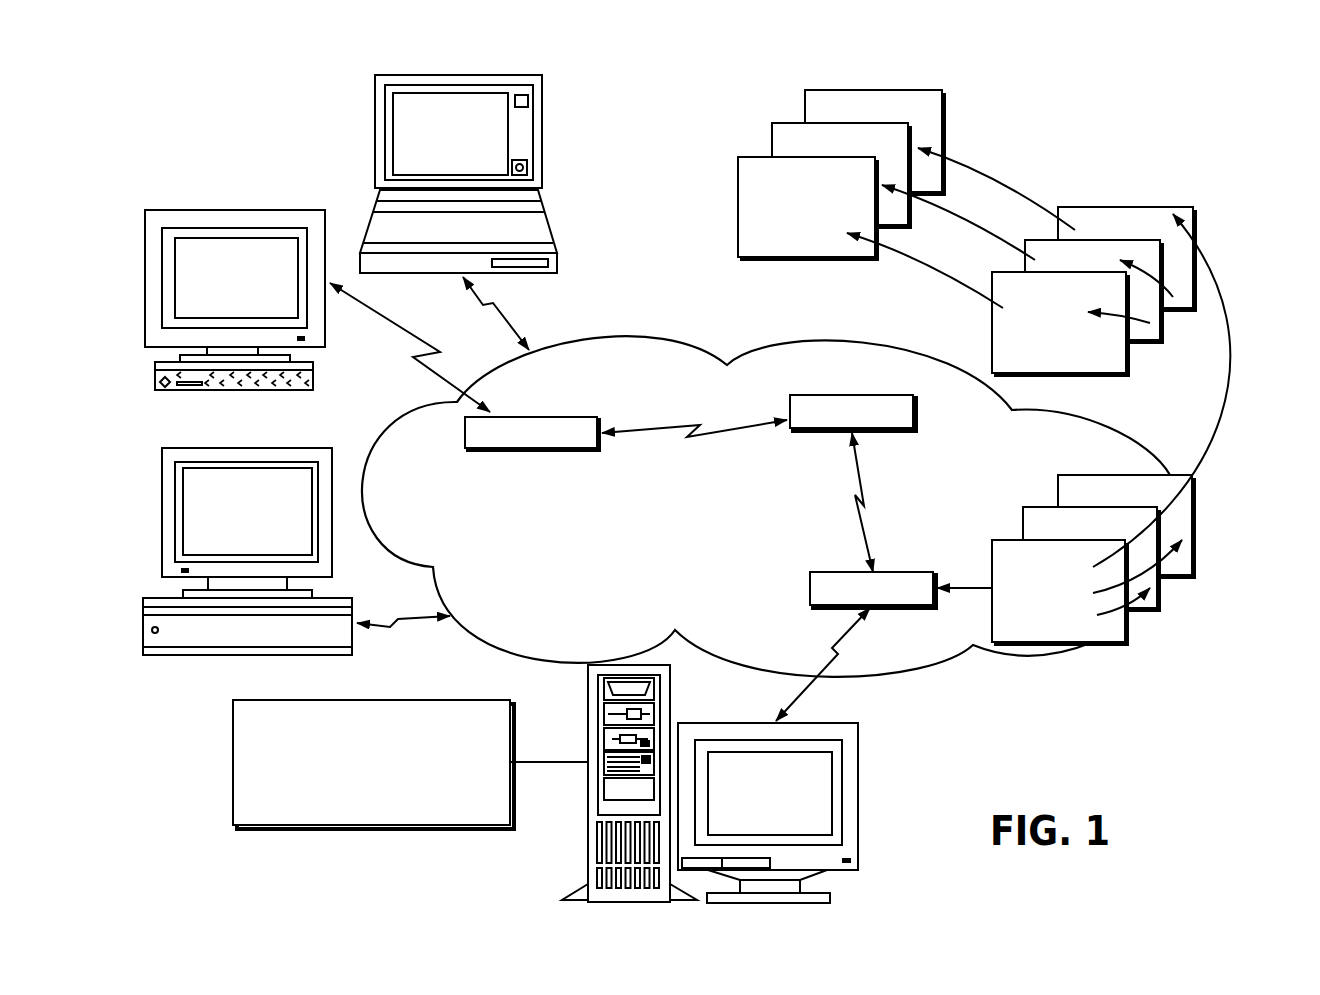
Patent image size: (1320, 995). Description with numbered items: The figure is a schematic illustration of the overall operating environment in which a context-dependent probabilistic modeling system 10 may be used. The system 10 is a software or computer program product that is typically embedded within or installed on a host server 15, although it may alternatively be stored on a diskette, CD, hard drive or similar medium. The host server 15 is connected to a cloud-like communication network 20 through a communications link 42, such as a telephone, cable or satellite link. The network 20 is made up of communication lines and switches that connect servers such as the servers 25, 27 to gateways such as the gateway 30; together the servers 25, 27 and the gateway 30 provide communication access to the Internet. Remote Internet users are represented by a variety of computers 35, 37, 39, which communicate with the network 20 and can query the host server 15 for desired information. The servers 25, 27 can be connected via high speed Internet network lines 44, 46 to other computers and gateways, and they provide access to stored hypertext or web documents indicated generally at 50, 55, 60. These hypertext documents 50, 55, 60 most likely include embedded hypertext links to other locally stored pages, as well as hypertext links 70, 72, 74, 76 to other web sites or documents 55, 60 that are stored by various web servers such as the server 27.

The context-dependent probabilistic modeling system 10 is at (233, 740).
The host server 15 is at (588, 707).
The communication network 20 is at (641, 341).
The server 25 is at (853, 571).
The server 27 is at (867, 396).
The gateway 30 is at (532, 450).
The computer 35 is at (551, 224).
The computer 37 is at (297, 210).
The computer 39 is at (302, 447).
The communication link 42 is at (789, 699).
The high speed Internet network line 44 is at (866, 528).
The high speed Internet network line 46 is at (684, 424).
The hypertext documents 50 is at (1199, 546).
The hypertext documents 55 is at (1204, 231).
The hypertext documents 60 is at (755, 141).
The hypertext links 70 is at (1227, 397).
The hypertext link 72 is at (1012, 191).
The hypertext link 74 is at (979, 226).
The hypertext link 76 is at (932, 270).